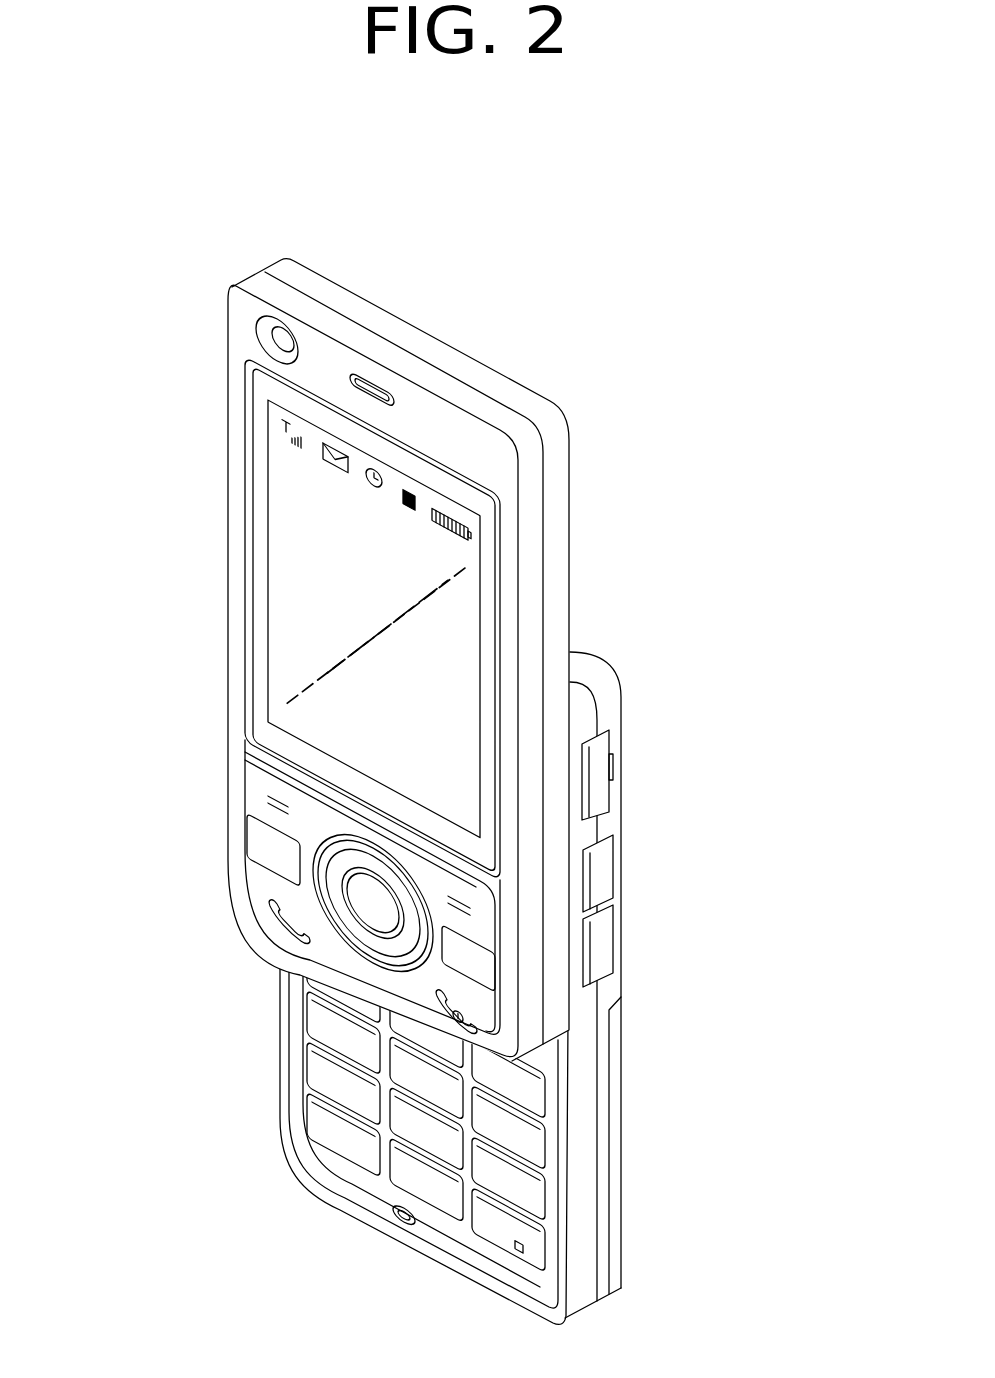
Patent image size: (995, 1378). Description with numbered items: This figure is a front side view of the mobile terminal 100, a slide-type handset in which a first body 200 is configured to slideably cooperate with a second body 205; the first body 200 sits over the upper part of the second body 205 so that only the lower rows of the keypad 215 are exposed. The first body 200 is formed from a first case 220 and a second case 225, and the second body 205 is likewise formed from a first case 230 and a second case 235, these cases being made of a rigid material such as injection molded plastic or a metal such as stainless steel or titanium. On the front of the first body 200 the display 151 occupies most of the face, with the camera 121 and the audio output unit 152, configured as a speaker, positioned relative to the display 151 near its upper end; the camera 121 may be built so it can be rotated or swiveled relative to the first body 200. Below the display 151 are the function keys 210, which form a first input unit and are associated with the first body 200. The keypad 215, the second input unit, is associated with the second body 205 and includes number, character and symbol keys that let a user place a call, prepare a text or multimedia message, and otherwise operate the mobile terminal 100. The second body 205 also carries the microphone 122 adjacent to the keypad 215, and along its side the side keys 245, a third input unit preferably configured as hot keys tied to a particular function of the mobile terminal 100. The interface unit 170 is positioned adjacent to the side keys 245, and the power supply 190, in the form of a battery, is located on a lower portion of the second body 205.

The mobile terminal 100 is at (586, 340).
The first body 200 is at (182, 433).
The second body 205 is at (263, 1037).
The function keys 210 is at (263, 840).
The keypad 215 is at (317, 1108).
The first case 220 is at (533, 537).
The second case 225 is at (558, 490).
The first case 230 is at (580, 699).
The second case 235 is at (612, 727).
The interface unit 170 is at (602, 768).
The side keys 245 is at (604, 945).
The power supply 190 is at (613, 1123).
The camera 121 is at (284, 340).
The microphone 122 is at (403, 1223).
The display 151 is at (283, 553).
The audio output unit 152 is at (372, 385).